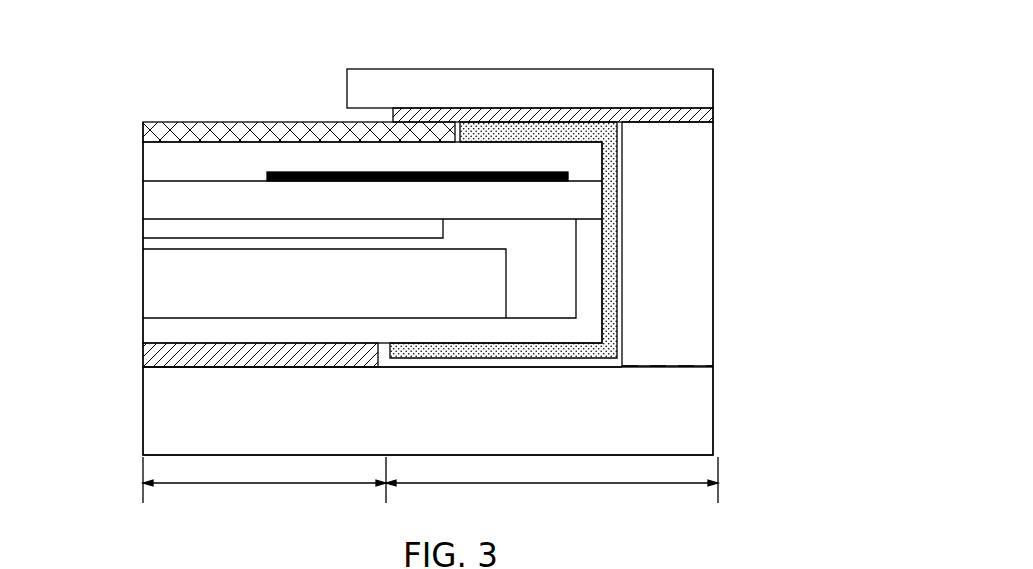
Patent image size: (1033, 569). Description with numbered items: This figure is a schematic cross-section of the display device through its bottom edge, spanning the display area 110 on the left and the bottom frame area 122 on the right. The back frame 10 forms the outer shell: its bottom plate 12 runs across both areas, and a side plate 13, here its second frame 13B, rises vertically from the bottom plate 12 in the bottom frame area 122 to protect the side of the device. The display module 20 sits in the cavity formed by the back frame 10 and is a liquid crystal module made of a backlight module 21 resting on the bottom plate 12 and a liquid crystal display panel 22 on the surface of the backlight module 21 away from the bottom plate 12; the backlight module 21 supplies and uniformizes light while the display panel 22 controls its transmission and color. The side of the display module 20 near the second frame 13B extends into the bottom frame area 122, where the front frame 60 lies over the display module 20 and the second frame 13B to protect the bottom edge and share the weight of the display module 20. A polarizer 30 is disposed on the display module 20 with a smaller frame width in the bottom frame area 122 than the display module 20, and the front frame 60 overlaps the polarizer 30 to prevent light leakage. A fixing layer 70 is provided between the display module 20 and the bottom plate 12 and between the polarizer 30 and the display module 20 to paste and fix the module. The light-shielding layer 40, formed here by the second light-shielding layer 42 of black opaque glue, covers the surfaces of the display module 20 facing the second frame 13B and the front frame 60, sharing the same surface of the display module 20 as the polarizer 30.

The back frame 10 is at (713, 353).
The bottom plate 12 is at (700, 421).
The side plate 13 is at (742, 244).
The second frame 13B is at (700, 293).
The display module 20 is at (318, 241).
The backlight module 21 is at (332, 281).
The liquid crystal display panel 22 is at (143, 140).
The polarizer 30 is at (247, 135).
The light-shielding layer 40 is at (536, 184).
The second light-shielding layer 42 is at (541, 135).
The front frame 60 is at (447, 88).
The fixing layer 70 is at (706, 117).
The display area 110 is at (264, 487).
The bottom frame area 122 is at (552, 487).